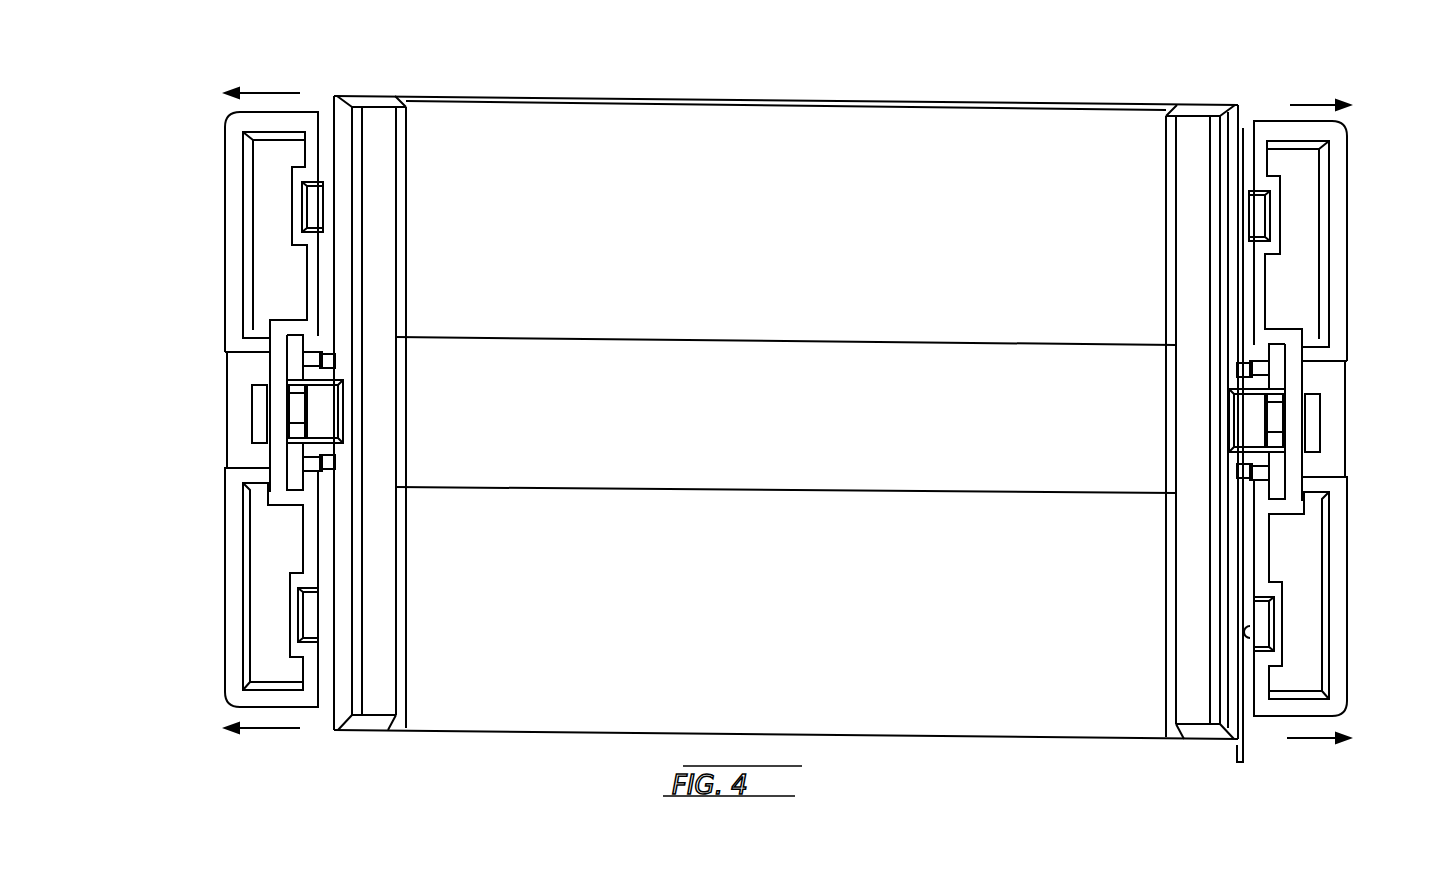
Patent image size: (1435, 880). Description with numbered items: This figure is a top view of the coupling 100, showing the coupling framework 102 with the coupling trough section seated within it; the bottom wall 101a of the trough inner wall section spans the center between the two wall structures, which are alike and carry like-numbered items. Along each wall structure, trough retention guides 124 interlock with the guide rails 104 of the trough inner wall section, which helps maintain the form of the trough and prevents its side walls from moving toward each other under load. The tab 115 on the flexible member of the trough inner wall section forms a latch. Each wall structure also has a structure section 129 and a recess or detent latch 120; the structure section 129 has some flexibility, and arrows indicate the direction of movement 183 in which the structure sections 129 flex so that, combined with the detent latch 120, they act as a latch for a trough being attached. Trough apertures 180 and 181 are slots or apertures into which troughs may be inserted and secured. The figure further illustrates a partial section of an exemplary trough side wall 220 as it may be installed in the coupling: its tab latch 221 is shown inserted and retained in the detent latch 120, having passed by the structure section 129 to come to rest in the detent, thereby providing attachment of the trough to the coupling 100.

The coupling 100 is at (662, 87).
The bottom wall 101a is at (805, 244).
The coupling framework 102 is at (412, 411).
The guide rails 104 is at (297, 472).
The tab 115 is at (786, 416).
The detent latch 120 is at (315, 208).
The trough retention guides 124 is at (308, 346).
The structure section 129 is at (237, 220).
The trough aperture 180 is at (330, 136).
The trough aperture 181 is at (1243, 136).
The direction of movement 183 is at (270, 90).
The side wall 220 is at (1237, 752).
The tab latch 221 is at (1250, 638).